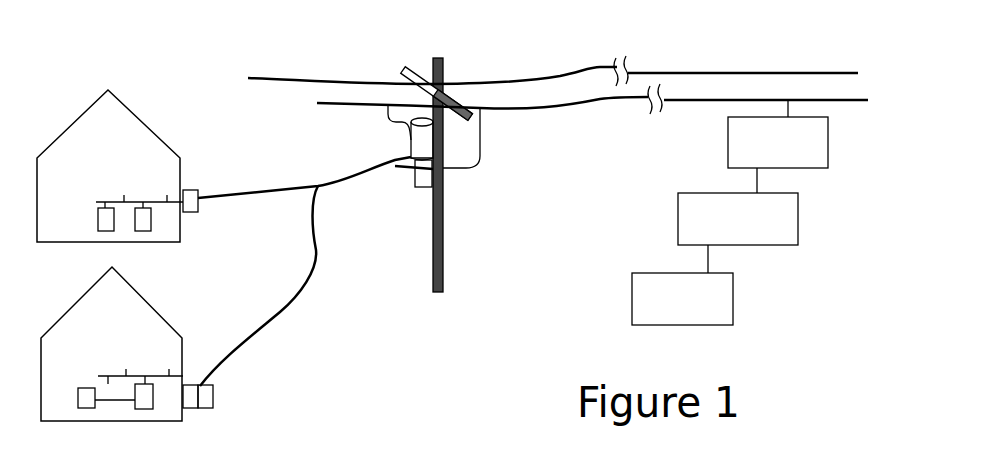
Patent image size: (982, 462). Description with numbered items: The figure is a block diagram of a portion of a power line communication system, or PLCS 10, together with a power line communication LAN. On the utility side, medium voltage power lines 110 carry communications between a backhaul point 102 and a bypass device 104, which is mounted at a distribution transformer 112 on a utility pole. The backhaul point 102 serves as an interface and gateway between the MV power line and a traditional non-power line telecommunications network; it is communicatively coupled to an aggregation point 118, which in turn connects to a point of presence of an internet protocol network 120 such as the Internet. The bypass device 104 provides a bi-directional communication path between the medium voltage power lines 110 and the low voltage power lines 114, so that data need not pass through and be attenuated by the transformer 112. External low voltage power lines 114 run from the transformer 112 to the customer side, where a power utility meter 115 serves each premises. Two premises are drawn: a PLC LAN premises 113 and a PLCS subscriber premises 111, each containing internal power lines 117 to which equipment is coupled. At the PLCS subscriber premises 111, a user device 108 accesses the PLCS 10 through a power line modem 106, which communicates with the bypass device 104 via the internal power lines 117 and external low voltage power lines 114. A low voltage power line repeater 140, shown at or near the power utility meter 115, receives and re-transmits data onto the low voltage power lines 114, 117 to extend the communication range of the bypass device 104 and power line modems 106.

The PLCS 10 is at (205, 54).
The backhaul point 102 is at (728, 141).
The bypass device 104 is at (419, 188).
The power line modem 106 is at (145, 410).
The user device 108 is at (88, 410).
The medium voltage power line 110 is at (528, 112).
The PLCS subscriber premises 111 is at (130, 281).
The distribution transformer 112 is at (407, 146).
The PLC LAN premises 113 is at (138, 115).
The low voltage power line 114 is at (343, 182).
The power utility meter 115 is at (198, 212).
The internal power line 117 is at (140, 200).
The aggregation point 118 is at (678, 222).
The IP network 120 is at (632, 296).
The low voltage power line repeater 140 is at (213, 395).